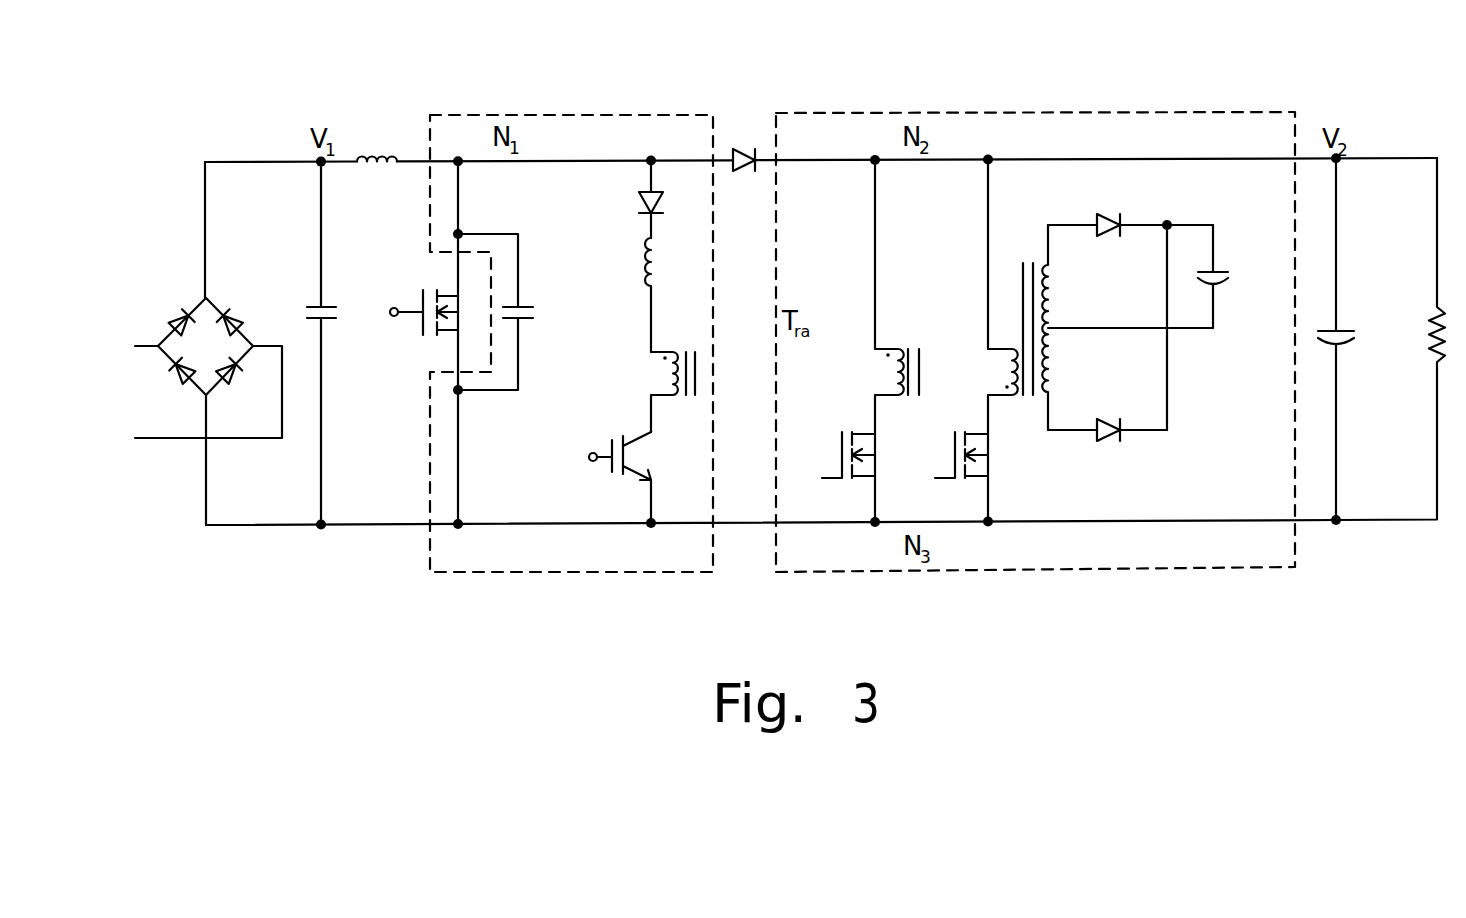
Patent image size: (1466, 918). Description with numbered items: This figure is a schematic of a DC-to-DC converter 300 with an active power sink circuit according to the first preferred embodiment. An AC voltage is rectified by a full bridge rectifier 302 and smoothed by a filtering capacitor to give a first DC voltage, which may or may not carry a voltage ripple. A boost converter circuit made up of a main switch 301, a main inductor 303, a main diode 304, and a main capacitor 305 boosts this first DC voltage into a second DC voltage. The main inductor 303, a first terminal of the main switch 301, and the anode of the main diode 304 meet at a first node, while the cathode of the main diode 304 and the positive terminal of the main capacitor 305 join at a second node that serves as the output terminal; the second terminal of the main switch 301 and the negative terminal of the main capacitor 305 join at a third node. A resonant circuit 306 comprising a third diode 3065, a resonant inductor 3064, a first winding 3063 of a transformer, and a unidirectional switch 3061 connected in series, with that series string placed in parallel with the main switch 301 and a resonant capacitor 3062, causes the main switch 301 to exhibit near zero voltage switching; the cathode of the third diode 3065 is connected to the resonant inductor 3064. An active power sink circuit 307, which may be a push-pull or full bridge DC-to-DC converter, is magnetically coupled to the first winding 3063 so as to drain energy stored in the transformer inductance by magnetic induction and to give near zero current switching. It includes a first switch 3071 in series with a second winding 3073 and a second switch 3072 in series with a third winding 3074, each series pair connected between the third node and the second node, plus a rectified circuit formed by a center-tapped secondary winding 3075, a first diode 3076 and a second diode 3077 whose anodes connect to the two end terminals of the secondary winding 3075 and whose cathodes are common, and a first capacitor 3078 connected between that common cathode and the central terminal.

The DC-to-DC converter 300 is at (257, 108).
The main switch 301 is at (416, 305).
The full bridge rectifier 302 is at (160, 300).
The main inductor 303 is at (377, 142).
The main diode 304 is at (741, 142).
The main capacitor 305 is at (1357, 339).
The resonant circuit 306 is at (585, 97).
The active power sink circuit 307 is at (1043, 95).
The unidirectional switch 3061 is at (590, 477).
The resonant capacitor 3062 is at (520, 312).
The first winding 3063 is at (652, 392).
The resonant inductor 3064 is at (621, 295).
The third diode 3065 is at (623, 200).
The first switch 3071 is at (831, 477).
The second switch 3072 is at (943, 477).
The second winding 3073 is at (878, 297).
The third winding 3074 is at (995, 297).
The secondary winding 3075 is at (1127, 327).
The first diode 3076 is at (1130, 208).
The second diode 3077 is at (1107, 414).
The first capacitor 3078 is at (1239, 276).